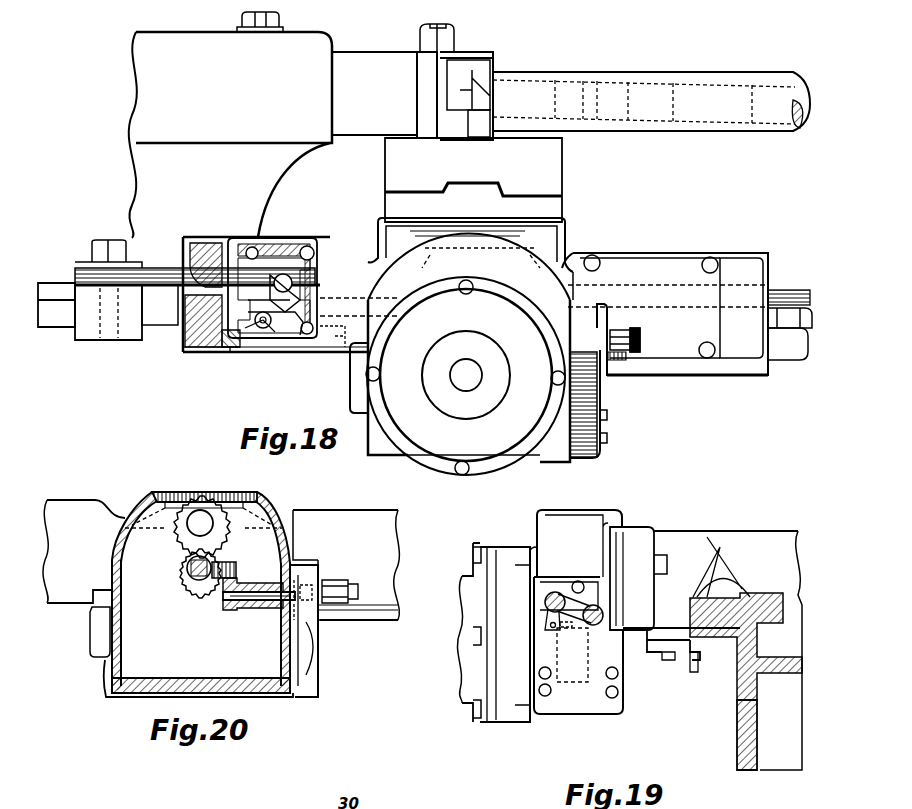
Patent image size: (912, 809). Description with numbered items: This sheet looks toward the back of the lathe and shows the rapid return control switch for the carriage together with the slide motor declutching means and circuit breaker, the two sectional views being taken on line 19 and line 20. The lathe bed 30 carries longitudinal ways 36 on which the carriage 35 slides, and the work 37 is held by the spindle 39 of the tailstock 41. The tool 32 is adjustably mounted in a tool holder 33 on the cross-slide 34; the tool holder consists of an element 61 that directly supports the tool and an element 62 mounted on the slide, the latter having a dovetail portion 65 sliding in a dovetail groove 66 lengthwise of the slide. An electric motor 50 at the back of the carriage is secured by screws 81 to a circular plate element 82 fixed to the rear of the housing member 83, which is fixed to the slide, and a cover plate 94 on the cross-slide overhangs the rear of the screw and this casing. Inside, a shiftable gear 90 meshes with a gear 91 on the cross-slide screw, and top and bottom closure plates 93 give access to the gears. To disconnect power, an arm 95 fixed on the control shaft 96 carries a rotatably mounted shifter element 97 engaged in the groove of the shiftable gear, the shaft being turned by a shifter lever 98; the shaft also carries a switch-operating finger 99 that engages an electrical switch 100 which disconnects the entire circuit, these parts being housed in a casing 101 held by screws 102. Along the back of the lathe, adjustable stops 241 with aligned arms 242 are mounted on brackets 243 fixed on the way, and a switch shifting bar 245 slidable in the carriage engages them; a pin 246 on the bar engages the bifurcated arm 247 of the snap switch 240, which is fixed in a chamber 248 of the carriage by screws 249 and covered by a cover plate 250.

In FIG. 18, the section line 19— 19 is at (792, 398).
In FIG. 19, the section line 20— 20 is at (610, 747).
In FIG. 19, the lathe bed 30 is at (736, 730).
In FIG. 18, the tool 32 is at (480, 118).
In FIG. 18, the tool holder 33 is at (486, 52).
In FIG. 18, the cross-slide 34 is at (535, 210).
In FIG. 18, the carriage 35 is at (648, 249).
In FIG. 19, the carriage 35 is at (742, 540).
In FIG. 18, the longitudinal ways 36 is at (47, 283).
In FIG. 19, the longitudinal ways 36 is at (738, 590).
In FIG. 18, the work 37 is at (637, 75).
In FIG. 18, the spindle 39 is at (472, 88).
In FIG. 18, the tailstock 41 is at (352, 62).
In FIG. 18, the electric motor 50 is at (452, 440).
In FIG. 19, the electric motor 50 is at (473, 676).
In FIG. 18, the tool holder element 61 is at (458, 130).
In FIG. 18, the tool holder element 62 is at (418, 172).
In FIG. 18, the dovetail portion 65 is at (488, 182).
In FIG. 18, the dovetail groove 66 is at (478, 192).
In FIG. 18, the screws 81 is at (468, 295).
In FIG. 19, the screws 81 is at (475, 712).
In FIG. 19, the circular plate element 82 is at (536, 527).
In FIG. 18, the housing member 83 is at (545, 452).
In FIG. 20, the housing member 83 is at (105, 662).
In FIG. 19, the housing member 83 is at (521, 690).
In FIG. 20, the shiftable gear 90 is at (183, 578).
In FIG. 20, the gear 91 is at (218, 510).
In FIG. 20, the closure plates 93 is at (183, 495).
In FIG. 19, the closure plates 93 is at (615, 524).
In FIG. 18, the cover plate 94 is at (415, 232).
In FIG. 20, the arm 95 is at (222, 602).
In FIG. 20, the control shaft 96 is at (265, 606).
In FIG. 20, the shifter element 97 is at (222, 570).
In FIG. 18, the shifter lever 98 is at (640, 336).
In FIG. 20, the shifter lever 98 is at (334, 581).
In FIG. 19, the shifter lever 98 is at (554, 598).
In FIG. 19, the switch-operating finger 99 is at (593, 603).
In FIG. 19, the electrical switch 100 is at (578, 684).
In FIG. 18, the casing 101 is at (603, 394).
In FIG. 20, the casing 101 is at (318, 665).
In FIG. 19, the casing 101 is at (612, 708).
In FIG. 18, the screws 102 is at (608, 438).
In FIG. 19, the screws 102 is at (620, 692).
In FIG. 18, the switch 240 is at (280, 335).
In FIG. 18, the adjustable stops 241 is at (150, 268).
In FIG. 18, the arm 242 is at (165, 296).
In FIG. 18, the brackets 243 is at (92, 312).
In FIG. 18, the switch shifting bar 245 is at (216, 248).
In FIG. 19, the switch shifting bar 245 is at (670, 560).
In FIG. 18, the pin 246 is at (290, 253).
In FIG. 18, the bifurcated arm 247 is at (320, 300).
In FIG. 18, the chamber 248 is at (248, 237).
In FIG. 18, the screws 249 is at (222, 352).
In FIG. 18, the cover plate 250 is at (315, 256).